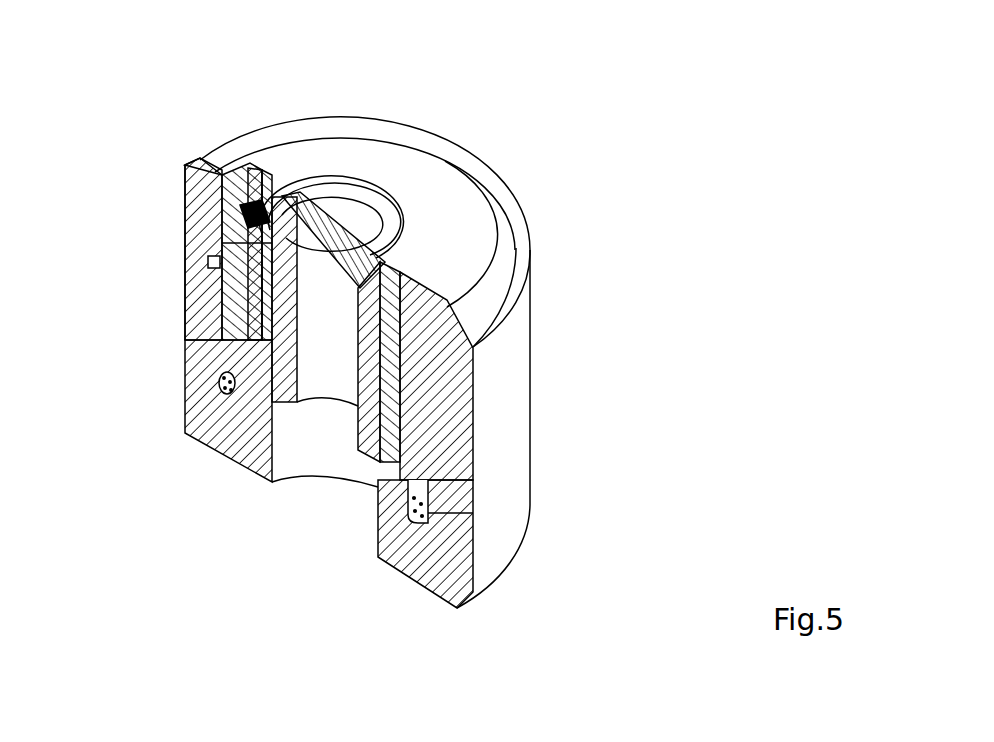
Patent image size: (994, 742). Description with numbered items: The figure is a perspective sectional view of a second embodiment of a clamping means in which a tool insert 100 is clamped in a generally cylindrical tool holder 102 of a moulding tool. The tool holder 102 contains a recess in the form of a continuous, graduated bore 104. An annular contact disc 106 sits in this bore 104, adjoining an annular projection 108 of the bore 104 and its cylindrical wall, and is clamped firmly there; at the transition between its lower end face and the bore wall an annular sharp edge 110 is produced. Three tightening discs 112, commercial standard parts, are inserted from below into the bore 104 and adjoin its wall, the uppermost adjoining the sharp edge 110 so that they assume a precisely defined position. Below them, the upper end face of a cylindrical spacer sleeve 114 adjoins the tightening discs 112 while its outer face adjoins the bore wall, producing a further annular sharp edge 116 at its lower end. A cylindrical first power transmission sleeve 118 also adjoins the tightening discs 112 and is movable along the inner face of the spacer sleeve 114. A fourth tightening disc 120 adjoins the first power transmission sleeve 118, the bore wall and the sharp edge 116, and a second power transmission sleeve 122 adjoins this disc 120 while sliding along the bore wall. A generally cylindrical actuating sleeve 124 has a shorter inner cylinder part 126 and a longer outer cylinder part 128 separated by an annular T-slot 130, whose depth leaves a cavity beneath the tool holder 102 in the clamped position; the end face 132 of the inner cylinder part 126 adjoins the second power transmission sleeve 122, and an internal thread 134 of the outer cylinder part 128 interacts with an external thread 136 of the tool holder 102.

The tool insert 100 is at (355, 217).
The tool holder 102 is at (453, 223).
The graduated bore 104 is at (205, 362).
The contact disc 106 is at (256, 212).
The annular projection 108 is at (270, 222).
The annular sharp edge 110 is at (203, 153).
The tightening discs 112 is at (186, 187).
The spacer sleeve 114 is at (217, 243).
The annular sharp edge 116 is at (230, 292).
The first power transmission sleeve 118 is at (212, 262).
The fourth tightening disc 120 is at (433, 393).
The second power transmission sleeve 122 is at (400, 430).
The actuating sleeve 124 is at (495, 365).
The inner cylinder part 126 is at (378, 505).
The outer cylinder part 128 is at (400, 472).
The annular T-slot 130 is at (473, 515).
The end face 132 is at (377, 460).
The internal thread 134 is at (531, 265).
The external thread 136 is at (515, 308).